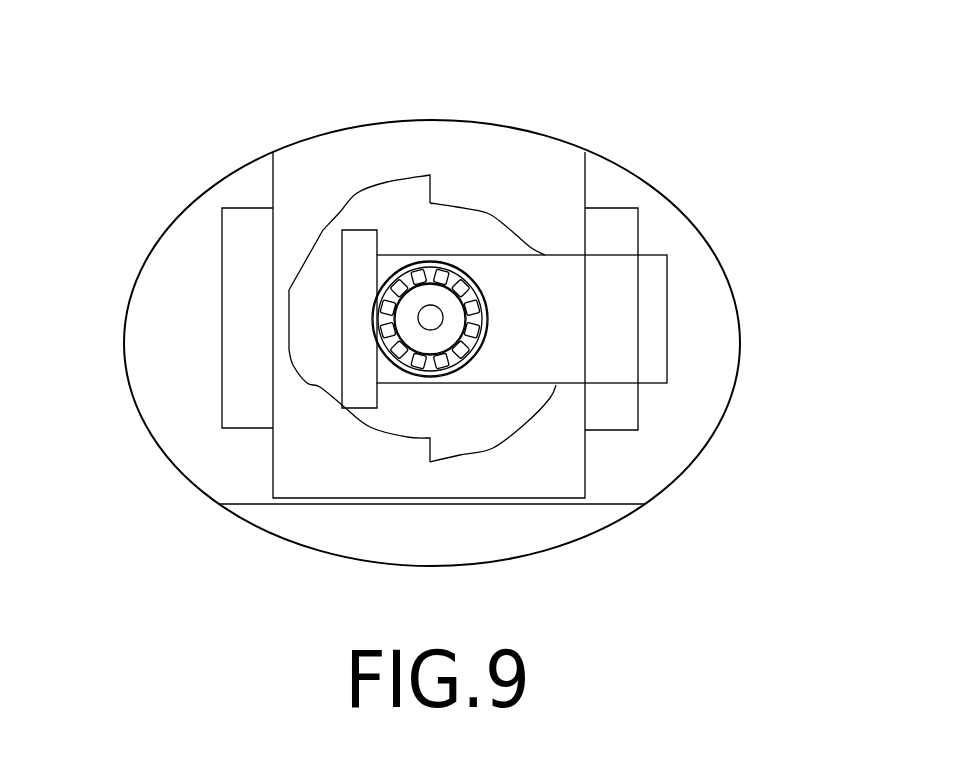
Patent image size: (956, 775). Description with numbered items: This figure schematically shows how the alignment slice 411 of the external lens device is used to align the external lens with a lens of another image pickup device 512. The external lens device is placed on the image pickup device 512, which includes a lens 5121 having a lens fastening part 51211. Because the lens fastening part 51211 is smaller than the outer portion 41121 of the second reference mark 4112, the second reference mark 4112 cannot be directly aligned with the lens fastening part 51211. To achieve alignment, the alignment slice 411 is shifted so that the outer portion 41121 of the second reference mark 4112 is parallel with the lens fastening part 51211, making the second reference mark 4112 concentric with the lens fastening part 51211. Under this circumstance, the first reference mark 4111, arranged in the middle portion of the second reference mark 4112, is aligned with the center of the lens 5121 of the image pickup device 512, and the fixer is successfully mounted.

The alignment slice 411 is at (642, 335).
The first reference mark 4111 is at (431, 317).
The second reference mark 4112 is at (384, 288).
The outer portion 41121 is at (477, 355).
The image pickup device 512 is at (255, 378).
The lens 5121 is at (426, 300).
The lens fastening part 51211 is at (488, 300).